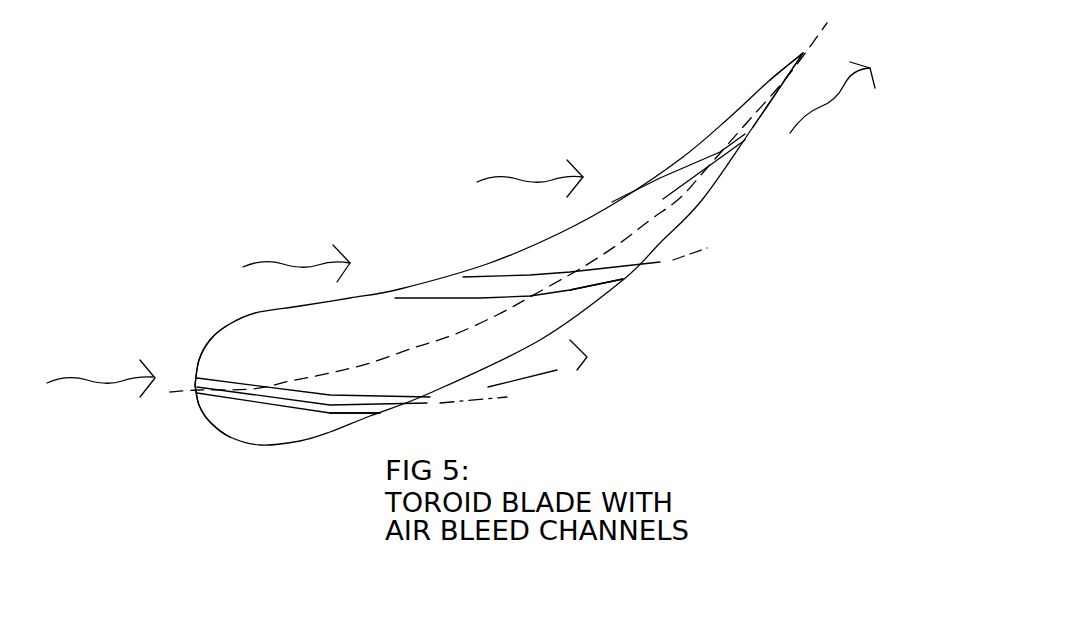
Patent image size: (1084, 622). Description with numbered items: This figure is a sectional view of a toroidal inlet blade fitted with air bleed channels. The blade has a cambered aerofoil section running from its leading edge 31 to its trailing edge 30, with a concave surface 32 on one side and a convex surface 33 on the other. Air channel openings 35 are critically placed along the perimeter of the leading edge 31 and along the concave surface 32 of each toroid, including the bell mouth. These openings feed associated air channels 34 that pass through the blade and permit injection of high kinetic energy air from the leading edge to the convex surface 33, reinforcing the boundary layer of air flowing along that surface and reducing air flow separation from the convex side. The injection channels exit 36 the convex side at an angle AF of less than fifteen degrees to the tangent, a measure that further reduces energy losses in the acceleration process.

The trailing edge 30 is at (846, 63).
The leading edge 31 is at (186, 389).
The concave surface 32 is at (499, 219).
The convex surface 33 is at (499, 249).
The air channels 34 is at (407, 438).
The air channel openings 35 is at (424, 262).
The injection channel exit 36 is at (633, 307).
The exit angle AF is at (709, 241).